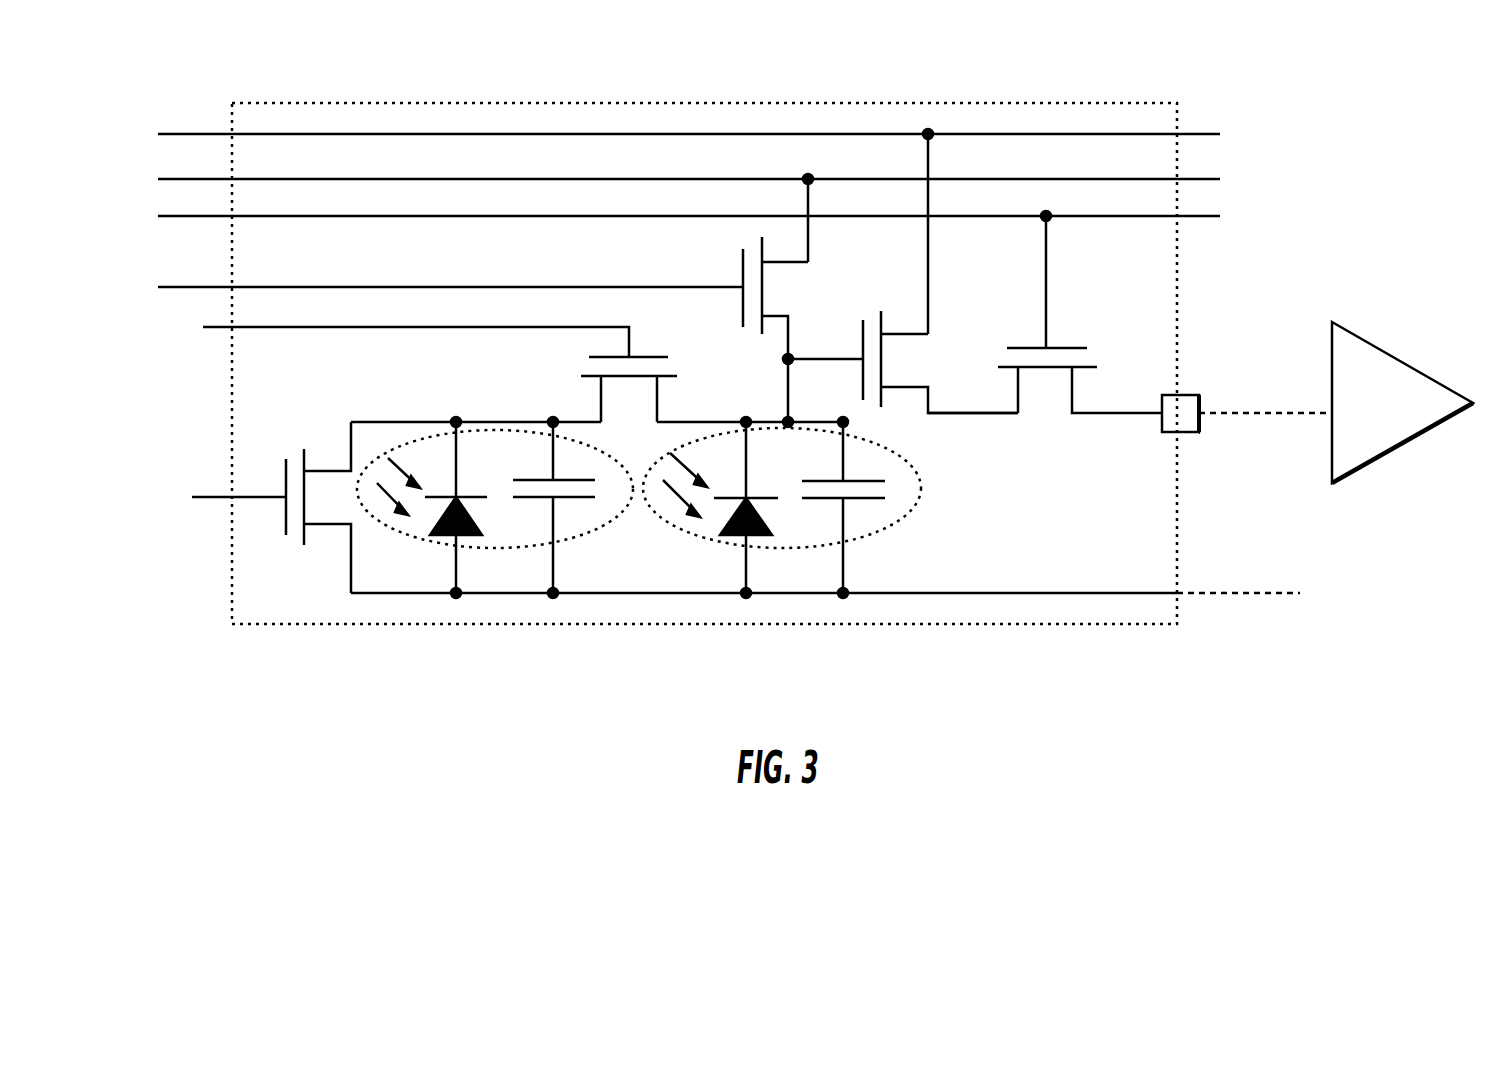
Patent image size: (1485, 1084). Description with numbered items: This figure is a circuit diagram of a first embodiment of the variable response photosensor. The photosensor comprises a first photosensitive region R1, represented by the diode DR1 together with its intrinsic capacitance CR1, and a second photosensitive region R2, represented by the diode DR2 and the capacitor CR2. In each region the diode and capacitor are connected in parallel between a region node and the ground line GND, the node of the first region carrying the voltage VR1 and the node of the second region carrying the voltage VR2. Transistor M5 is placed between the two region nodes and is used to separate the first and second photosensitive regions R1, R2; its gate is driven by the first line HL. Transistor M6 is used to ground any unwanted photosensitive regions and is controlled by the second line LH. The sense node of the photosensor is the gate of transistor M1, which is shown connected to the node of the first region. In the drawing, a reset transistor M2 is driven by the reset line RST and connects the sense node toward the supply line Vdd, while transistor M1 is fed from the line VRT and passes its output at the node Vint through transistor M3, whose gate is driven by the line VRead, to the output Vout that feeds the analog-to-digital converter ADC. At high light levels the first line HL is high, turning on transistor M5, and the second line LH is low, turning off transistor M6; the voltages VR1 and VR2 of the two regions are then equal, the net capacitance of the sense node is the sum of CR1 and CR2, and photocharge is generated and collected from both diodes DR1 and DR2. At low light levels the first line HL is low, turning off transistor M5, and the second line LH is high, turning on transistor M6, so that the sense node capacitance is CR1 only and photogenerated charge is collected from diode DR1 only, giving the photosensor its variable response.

The reset voltage supply line VRT is at (671, 226).
The supply voltage line Vdd is at (670, 212).
The read voltage line VRead is at (659, 273).
The reset signal line RST is at (432, 292).
The first line HL is at (401, 334).
The second line LH is at (226, 482).
The transistor M1 is at (940, 354).
The reset transistor M2 is at (775, 329).
The read select transistor M3 is at (1080, 354).
The transistor M5 is at (629, 407).
The transistor M6 is at (318, 500).
The first photosensitive region R1 is at (870, 533).
The second photosensitive region R2 is at (507, 550).
The first diode DR1 is at (727, 507).
The second diode DR2 is at (439, 507).
The intrinsic capacitance CR1 is at (849, 507).
The capacitor CR2 is at (559, 507).
The voltage of the first photosensitive region VR1 is at (752, 402).
The voltage of the second photosensitive region VR2 is at (476, 402).
The integration node voltage Vint is at (973, 431).
The output voltage Vout is at (1247, 401).
The ground line GND is at (825, 567).
The analog-to-digital converter ADC is at (1402, 402).